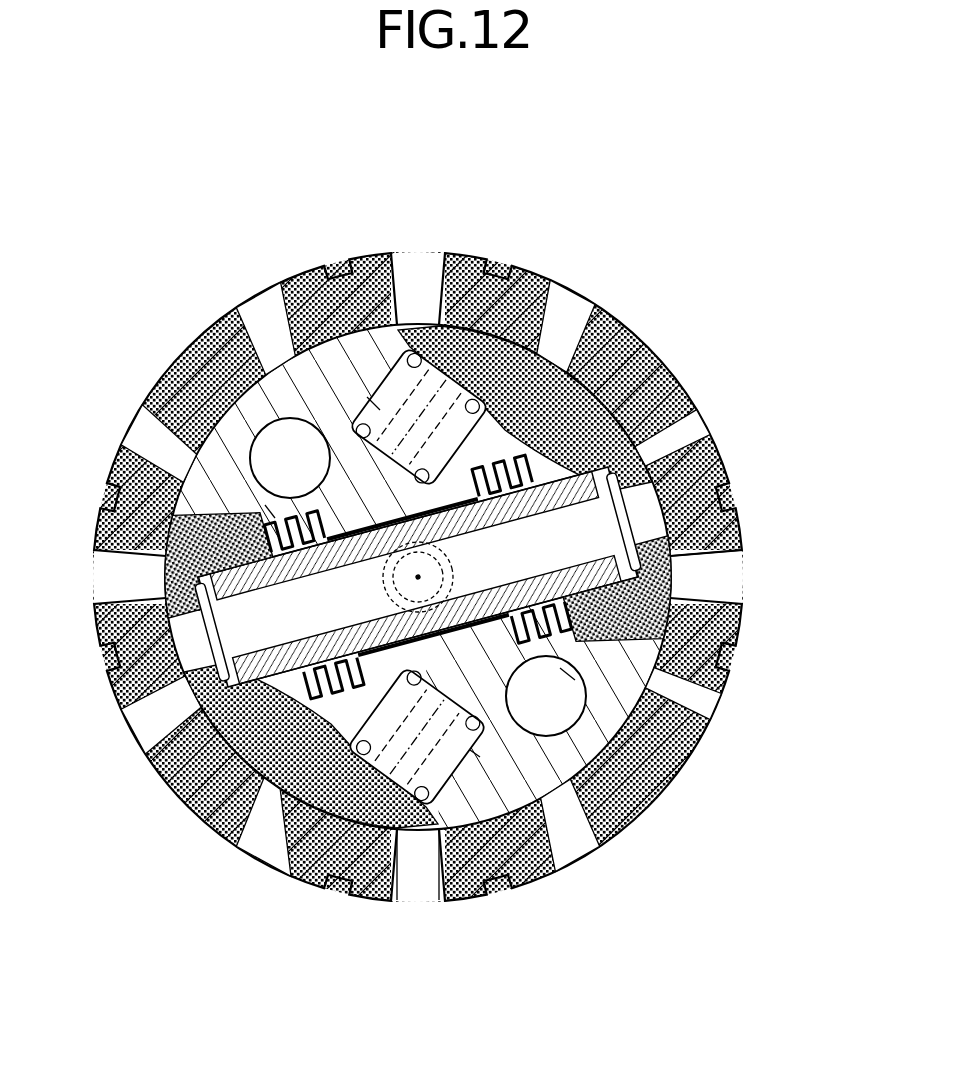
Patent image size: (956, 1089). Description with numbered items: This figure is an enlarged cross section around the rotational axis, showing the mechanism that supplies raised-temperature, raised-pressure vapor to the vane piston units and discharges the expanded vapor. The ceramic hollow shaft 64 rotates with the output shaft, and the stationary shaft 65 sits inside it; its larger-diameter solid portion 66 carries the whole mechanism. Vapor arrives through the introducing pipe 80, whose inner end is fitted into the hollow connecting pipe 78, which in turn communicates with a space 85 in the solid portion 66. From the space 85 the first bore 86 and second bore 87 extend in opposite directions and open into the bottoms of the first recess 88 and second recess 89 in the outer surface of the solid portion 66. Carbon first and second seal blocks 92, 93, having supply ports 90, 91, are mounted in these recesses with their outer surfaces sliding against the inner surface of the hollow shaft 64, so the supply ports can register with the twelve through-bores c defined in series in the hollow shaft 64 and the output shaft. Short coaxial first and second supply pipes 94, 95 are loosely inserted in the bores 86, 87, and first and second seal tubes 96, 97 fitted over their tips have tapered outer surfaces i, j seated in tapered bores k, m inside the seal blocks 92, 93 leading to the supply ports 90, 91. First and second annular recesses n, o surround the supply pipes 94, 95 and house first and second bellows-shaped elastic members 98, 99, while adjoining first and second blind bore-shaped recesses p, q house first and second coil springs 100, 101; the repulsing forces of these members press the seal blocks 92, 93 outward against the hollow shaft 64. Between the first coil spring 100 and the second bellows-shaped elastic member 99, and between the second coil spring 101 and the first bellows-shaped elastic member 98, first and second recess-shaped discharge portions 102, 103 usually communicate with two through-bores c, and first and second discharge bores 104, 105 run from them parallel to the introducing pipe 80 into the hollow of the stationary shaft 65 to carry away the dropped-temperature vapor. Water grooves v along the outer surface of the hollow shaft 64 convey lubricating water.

The hollow shaft 64 is at (470, 282).
The stationary shaft 65 is at (381, 323).
The larger-diameter solid portion 66 is at (320, 308).
The hollow connecting pipe 78 is at (417, 736).
The raised temperature/pressure vapor-introducing pipe 80 is at (417, 426).
The space 85 is at (440, 572).
The first bore 86 is at (546, 696).
The second bore 87 is at (332, 510).
The first recess 88 is at (706, 595).
The second recess 89 is at (166, 563).
The supply port 90 is at (714, 550).
The supply port 91 is at (166, 612).
The first seal block 92 is at (650, 368).
The second seal block 93 is at (282, 770).
The first supply pipe 94 is at (710, 499).
The second supply pipe 95 is at (145, 676).
The first seal tube 96 is at (577, 607).
The second seal tube 97 is at (218, 532).
The first bellows-shaped elastic member 98 is at (530, 500).
The second bellows-shaped elastic member 99 is at (320, 642).
The first coil spring 100 is at (552, 345).
The second coil spring 101 is at (403, 872).
The first recess-shaped discharge portion 102 is at (205, 356).
The second recess-shaped discharge portion 103 is at (642, 790).
The first discharge bore 104 is at (180, 420).
The second discharge bore 105 is at (545, 736).
The through-bores c is at (255, 332).
The tapered outer peripheral surface i is at (633, 472).
The tapered outer peripheral surface j is at (203, 716).
The tapered bore k is at (606, 507).
The tapered bore m is at (258, 650).
The first annular recess n is at (575, 680).
The second annular recess o is at (265, 505).
The first blind bore-shaped recess p is at (367, 397).
The second blind bore-shaped recess q is at (480, 757).
The water grooves v is at (725, 656).